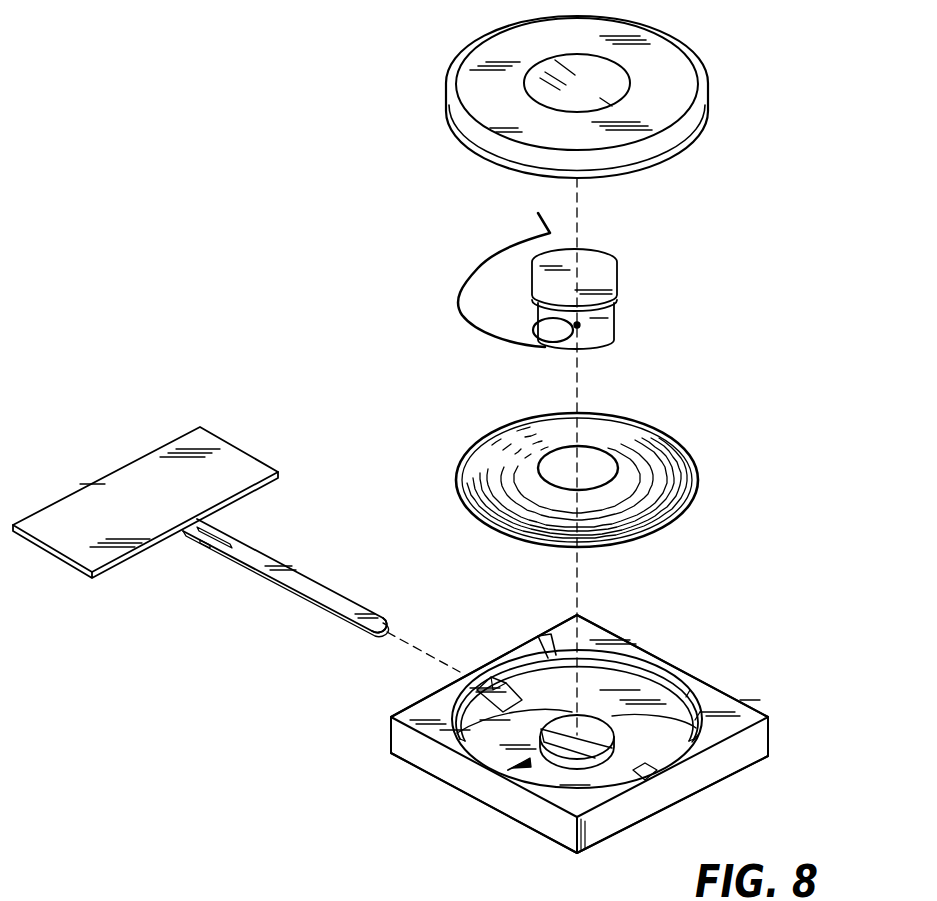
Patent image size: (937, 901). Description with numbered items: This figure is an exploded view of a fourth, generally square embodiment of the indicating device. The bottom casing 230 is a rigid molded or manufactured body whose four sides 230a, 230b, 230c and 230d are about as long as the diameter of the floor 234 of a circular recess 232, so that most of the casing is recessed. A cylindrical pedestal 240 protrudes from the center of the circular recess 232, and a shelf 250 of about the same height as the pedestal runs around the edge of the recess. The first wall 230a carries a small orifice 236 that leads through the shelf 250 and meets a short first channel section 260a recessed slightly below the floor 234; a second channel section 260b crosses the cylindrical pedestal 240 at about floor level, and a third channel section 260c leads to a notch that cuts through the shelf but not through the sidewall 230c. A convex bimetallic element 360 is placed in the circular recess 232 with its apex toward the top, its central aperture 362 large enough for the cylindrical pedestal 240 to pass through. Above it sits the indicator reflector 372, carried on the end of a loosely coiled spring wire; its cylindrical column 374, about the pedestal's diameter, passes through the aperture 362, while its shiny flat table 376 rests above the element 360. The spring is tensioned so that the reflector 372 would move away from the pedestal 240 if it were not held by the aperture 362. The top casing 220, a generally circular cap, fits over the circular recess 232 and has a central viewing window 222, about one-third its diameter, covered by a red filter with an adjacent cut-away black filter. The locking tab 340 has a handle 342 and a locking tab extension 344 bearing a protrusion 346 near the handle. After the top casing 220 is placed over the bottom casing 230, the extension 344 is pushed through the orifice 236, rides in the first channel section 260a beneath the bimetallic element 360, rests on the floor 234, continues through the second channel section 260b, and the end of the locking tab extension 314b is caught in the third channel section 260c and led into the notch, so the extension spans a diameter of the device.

The top casing 220 is at (735, 121).
The viewing window 222 is at (593, 78).
The indicator reflector 372 is at (635, 293).
The cylindrical column 374 is at (590, 336).
The flat table 376 is at (600, 262).
The convex bimetallic element 360 is at (722, 468).
The aperture 362 is at (598, 455).
The locking tab 340 is at (209, 500).
The handle 342 is at (238, 472).
The locking tab extension 344 is at (317, 590).
The protrusion 346 is at (203, 543).
The arm end 314b is at (350, 625).
The bottom casing 230 is at (591, 718).
The first wall 230a is at (427, 697).
The side 230b is at (391, 751).
The sidewall 230c is at (682, 782).
The side 230d is at (607, 615).
The circular recess 232 is at (478, 783).
The floor 234 is at (550, 772).
The orifice 236 is at (485, 683).
The cylindrical pedestal 240 is at (585, 728).
The shelf 250 is at (685, 677).
The first channel section 260a is at (513, 680).
The second channel section 260b is at (455, 773).
The third channel section 260c is at (639, 775).